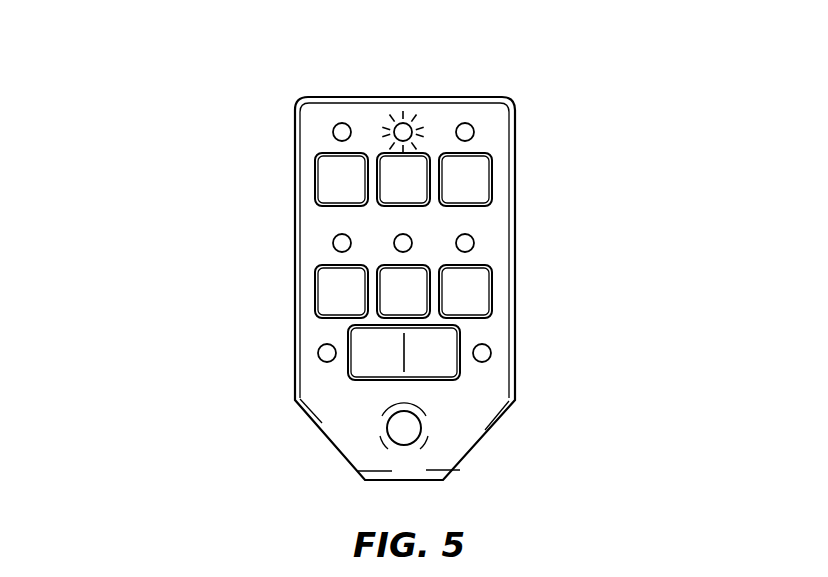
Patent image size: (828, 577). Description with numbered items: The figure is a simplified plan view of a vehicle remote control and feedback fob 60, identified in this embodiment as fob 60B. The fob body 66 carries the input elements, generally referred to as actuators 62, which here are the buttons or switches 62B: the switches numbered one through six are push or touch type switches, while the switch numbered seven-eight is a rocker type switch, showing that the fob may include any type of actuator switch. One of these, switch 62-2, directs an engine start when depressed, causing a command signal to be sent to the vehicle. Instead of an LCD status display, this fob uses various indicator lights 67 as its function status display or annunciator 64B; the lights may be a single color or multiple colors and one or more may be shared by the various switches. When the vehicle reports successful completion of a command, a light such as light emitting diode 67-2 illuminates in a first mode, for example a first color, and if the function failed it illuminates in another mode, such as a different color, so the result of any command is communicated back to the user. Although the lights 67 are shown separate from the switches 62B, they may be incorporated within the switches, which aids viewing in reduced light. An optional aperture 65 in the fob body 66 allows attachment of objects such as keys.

The fob 60 is at (572, 347).
The fob 60B is at (572, 128).
The actuators 62 is at (272, 205).
The buttons or switches 62B is at (321, 205).
The switch 62-2 is at (379, 154).
The function status display or audio annunciator 64B is at (236, 127).
The aperture 65 is at (421, 430).
The fob body 66 is at (338, 97).
The indicator lights 67 is at (333, 130).
The light emitting diode 67-2 is at (414, 126).